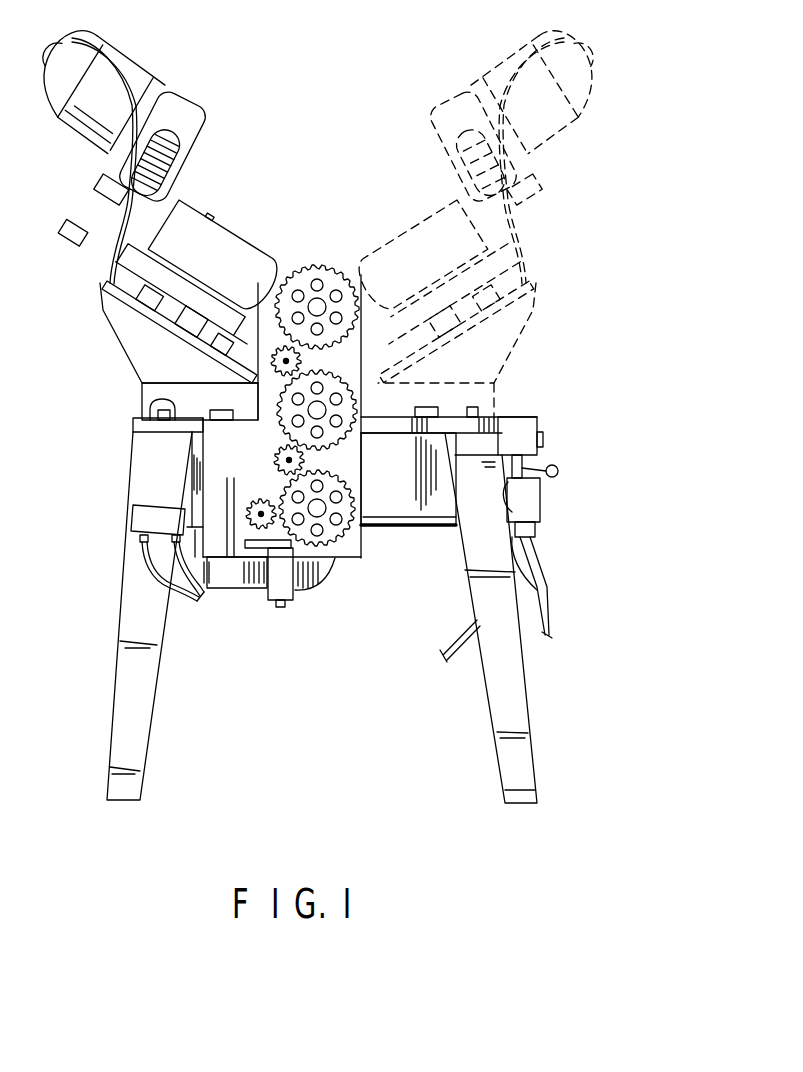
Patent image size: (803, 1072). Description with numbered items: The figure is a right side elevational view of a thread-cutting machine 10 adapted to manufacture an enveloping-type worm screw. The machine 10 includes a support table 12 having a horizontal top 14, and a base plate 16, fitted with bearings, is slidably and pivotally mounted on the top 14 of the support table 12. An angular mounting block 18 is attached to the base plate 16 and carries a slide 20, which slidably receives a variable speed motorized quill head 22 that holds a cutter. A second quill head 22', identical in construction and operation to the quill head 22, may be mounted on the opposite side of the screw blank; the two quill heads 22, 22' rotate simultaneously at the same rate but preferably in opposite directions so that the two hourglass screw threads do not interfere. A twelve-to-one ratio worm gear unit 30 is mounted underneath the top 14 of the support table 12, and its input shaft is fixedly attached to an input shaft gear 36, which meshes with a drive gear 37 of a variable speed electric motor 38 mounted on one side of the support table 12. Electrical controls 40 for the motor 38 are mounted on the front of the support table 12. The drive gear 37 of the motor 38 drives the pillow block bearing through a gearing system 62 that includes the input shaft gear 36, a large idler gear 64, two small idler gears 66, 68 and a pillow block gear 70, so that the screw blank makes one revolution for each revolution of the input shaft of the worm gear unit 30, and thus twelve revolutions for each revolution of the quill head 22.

The machine 10 is at (275, 140).
The support table 12 is at (133, 469).
The horizontal top 14 is at (153, 402).
The base plate 16 is at (143, 391).
The angular mounting block 18 is at (128, 338).
The slide 20 is at (115, 264).
The variable speed motorized quill head 22 is at (155, 189).
The quill head 22' is at (470, 217).
The worm gear unit 30 is at (312, 589).
The input shaft gear 36 is at (327, 544).
The drive gear 37 is at (265, 498).
The variable speed electric motor 38 is at (272, 590).
The electrical controls 40 is at (540, 502).
The gearing system 62 is at (332, 457).
The large idler gear 64 is at (275, 430).
The small idler gear 66 is at (306, 463).
The small idler gear 68 is at (277, 371).
The pillow block gear 70 is at (315, 268).